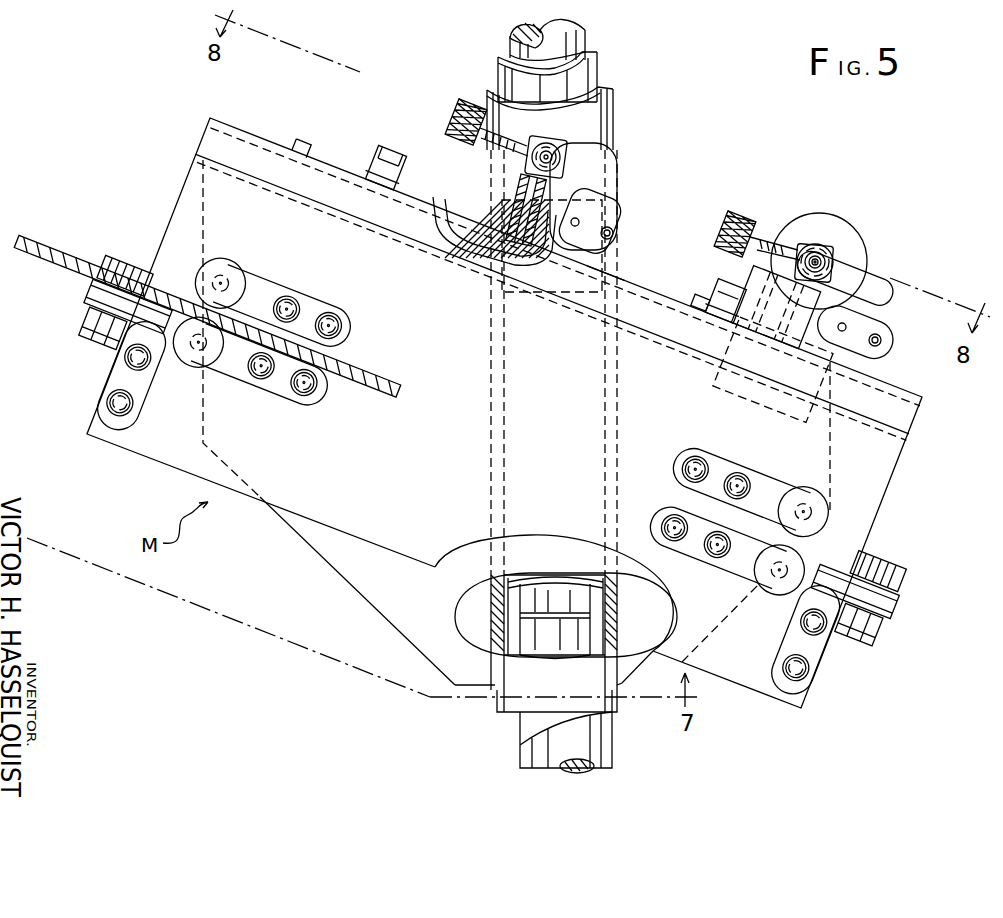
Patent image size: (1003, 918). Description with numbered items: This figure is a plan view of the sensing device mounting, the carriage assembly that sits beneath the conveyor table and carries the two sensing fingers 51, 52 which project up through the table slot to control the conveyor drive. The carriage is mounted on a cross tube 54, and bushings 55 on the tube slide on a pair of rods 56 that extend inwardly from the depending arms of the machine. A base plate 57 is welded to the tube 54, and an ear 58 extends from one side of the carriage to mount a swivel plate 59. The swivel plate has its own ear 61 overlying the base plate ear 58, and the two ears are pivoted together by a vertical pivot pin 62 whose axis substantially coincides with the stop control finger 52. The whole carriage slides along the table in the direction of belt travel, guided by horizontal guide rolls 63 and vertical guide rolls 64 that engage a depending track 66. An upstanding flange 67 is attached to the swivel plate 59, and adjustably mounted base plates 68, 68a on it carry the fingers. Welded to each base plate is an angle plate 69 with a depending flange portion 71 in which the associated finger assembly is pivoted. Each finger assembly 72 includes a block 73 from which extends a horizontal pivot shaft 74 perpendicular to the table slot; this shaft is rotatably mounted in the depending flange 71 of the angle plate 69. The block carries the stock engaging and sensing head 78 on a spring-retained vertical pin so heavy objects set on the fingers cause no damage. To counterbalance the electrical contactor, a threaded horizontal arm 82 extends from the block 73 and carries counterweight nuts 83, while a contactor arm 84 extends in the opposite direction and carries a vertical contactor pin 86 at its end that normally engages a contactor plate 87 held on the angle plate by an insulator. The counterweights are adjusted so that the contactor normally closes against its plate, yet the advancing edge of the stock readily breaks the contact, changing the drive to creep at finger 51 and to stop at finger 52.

The finger 51 is at (563, 148).
The finger 52 is at (850, 240).
The cross tube 54 is at (497, 707).
The bushings 55 is at (585, 60).
The rods 56 is at (515, 33).
The base plate 57 is at (338, 565).
The ear 58 is at (798, 228).
The swivel plate 59 is at (298, 507).
The ear 61 is at (742, 288).
The vertical pivot pin 62 is at (813, 245).
The horizontal guide rolls 63 is at (200, 332).
The vertical guide rolls 64 is at (125, 256).
The depending track 66 is at (42, 240).
The upstanding flange 67 is at (290, 178).
The base plate 68 is at (878, 371).
The base plate 68a is at (605, 272).
The angle plate 69 is at (600, 258).
The depending flange portion 71 is at (518, 195).
The finger assemblies 72 is at (605, 170).
The block 73 is at (546, 143).
The horizontal pivot shaft 74 is at (515, 215).
The sensing head 78 is at (565, 158).
The threaded horizontal arm 82 is at (452, 121).
The counterweight nuts 83 is at (481, 142).
The contactor arm 84 is at (610, 215).
The vertical contactor pin 86 is at (585, 222).
The contactor plate 87 is at (592, 272).